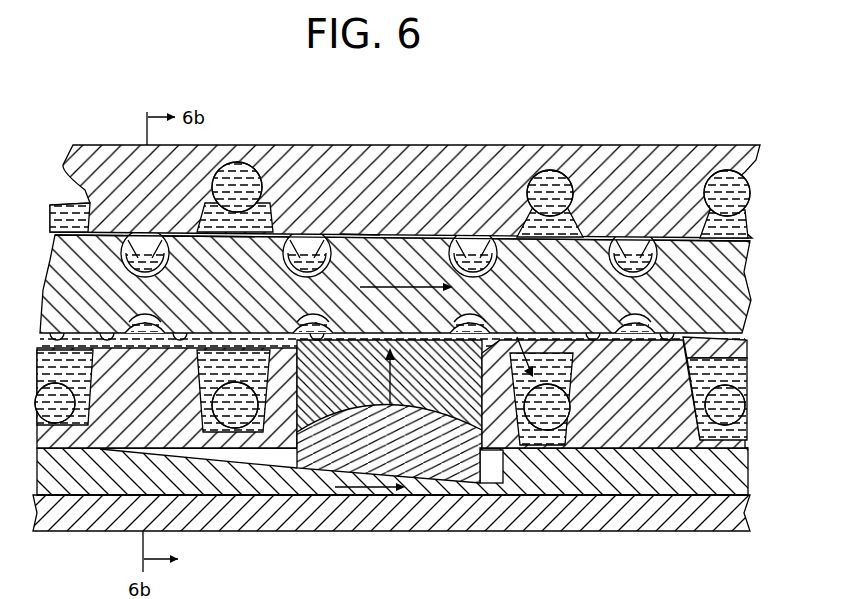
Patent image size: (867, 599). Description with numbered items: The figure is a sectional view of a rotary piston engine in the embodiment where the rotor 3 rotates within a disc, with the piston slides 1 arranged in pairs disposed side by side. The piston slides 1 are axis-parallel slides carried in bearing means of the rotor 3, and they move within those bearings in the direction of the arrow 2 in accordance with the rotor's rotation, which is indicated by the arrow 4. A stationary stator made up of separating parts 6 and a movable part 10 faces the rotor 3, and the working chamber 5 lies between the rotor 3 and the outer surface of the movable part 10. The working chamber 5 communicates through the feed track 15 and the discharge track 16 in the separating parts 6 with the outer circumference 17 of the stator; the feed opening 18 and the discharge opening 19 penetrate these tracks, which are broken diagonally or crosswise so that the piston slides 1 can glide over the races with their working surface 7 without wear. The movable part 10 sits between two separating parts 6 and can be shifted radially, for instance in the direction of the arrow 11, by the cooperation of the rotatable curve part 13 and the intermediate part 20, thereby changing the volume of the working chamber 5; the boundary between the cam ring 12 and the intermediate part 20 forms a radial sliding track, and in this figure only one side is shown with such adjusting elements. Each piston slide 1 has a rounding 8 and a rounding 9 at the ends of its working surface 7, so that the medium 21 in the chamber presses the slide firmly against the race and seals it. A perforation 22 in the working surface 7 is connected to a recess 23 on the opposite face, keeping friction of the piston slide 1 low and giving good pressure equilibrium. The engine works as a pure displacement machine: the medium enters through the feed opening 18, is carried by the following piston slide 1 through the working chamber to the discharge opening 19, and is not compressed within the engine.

The piston slide 1 is at (130, 233).
The arrow 2 is at (305, 229).
The rotor 3 is at (688, 240).
The arrow 4 is at (378, 282).
The working chamber 5 is at (365, 233).
The separating part 6 is at (650, 412).
The working surface 7 is at (632, 252).
The rounding 8 is at (615, 240).
The rounding 9 is at (655, 248).
The movable part 10 is at (452, 480).
The arrow 11 is at (443, 388).
The cam ring 12 is at (507, 450).
The rotatable curve part 13 is at (408, 440).
The feed track 15 is at (245, 405).
The discharge track 16 is at (595, 430).
The outer circumference of the stator 17 is at (157, 335).
The feed opening 18 is at (262, 352).
The discharge opening 19 is at (553, 430).
The intermediate part 20 is at (320, 452).
The medium 21 is at (322, 245).
The perforation 22 is at (460, 232).
The recess 23 is at (173, 233).